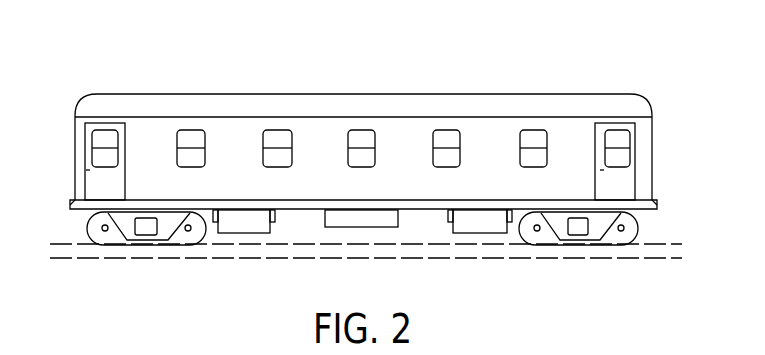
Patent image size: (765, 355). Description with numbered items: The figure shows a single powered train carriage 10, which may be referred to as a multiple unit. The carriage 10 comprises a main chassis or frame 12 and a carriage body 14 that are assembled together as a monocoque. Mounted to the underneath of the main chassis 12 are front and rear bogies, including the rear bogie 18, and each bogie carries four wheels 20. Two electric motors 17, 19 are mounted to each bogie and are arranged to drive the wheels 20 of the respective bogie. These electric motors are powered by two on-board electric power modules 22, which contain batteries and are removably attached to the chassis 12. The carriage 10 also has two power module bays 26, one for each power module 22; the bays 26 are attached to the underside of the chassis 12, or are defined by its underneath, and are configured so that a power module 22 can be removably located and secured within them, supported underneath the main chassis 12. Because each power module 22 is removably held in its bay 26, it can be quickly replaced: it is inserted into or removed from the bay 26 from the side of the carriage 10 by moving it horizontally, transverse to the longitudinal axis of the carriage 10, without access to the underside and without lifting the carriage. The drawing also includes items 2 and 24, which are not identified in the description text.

The track rails 2 is at (506, 252).
The train carriage 10 is at (365, 53).
The main chassis 12 is at (410, 200).
The carriage body 14 is at (492, 130).
The electric motor 17 is at (578, 215).
The rear bogie 18 is at (149, 233).
The electric motor 19 is at (146, 217).
The wheels 20 is at (105, 241).
The electric power module 22 is at (240, 226).
The central equipment box 24 is at (363, 222).
The power module bay 26 is at (277, 215).